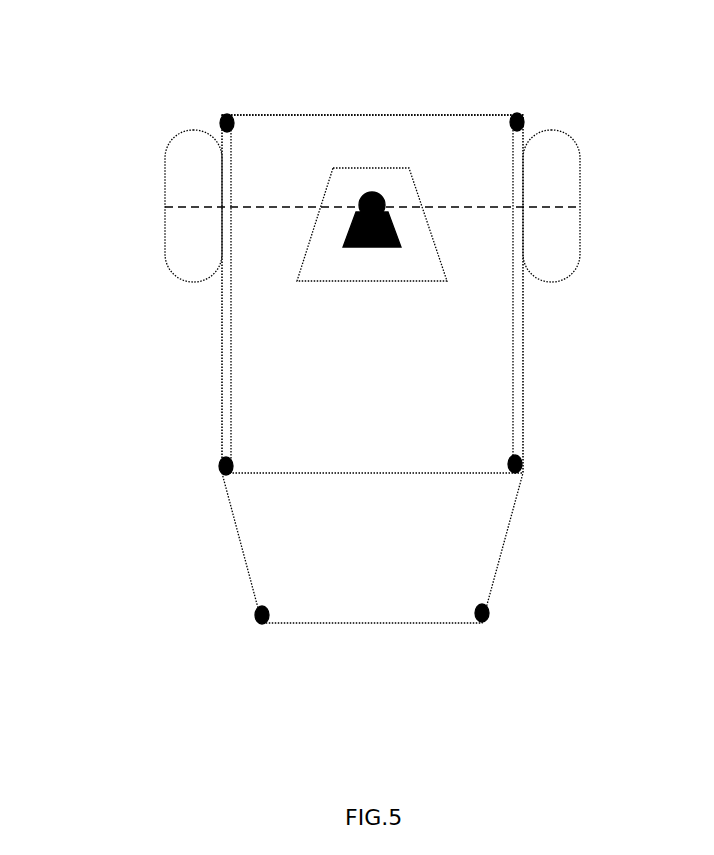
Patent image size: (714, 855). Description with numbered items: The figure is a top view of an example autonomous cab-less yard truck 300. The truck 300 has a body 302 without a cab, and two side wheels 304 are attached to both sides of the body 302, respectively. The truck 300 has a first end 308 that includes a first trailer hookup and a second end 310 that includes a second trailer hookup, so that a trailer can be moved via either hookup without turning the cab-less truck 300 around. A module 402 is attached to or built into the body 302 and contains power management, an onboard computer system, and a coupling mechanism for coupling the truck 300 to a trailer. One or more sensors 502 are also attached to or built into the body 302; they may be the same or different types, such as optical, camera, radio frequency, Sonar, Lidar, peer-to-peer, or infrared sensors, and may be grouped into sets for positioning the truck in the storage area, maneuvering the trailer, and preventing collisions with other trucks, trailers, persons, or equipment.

The autonomous cab-less yard truck 300 is at (182, 38).
The body 302 is at (387, 400).
The side wheels 304 is at (173, 173).
The first end 308 is at (342, 627).
The second end 310 is at (365, 115).
The module 402 is at (415, 183).
The sensors 502 is at (233, 116).